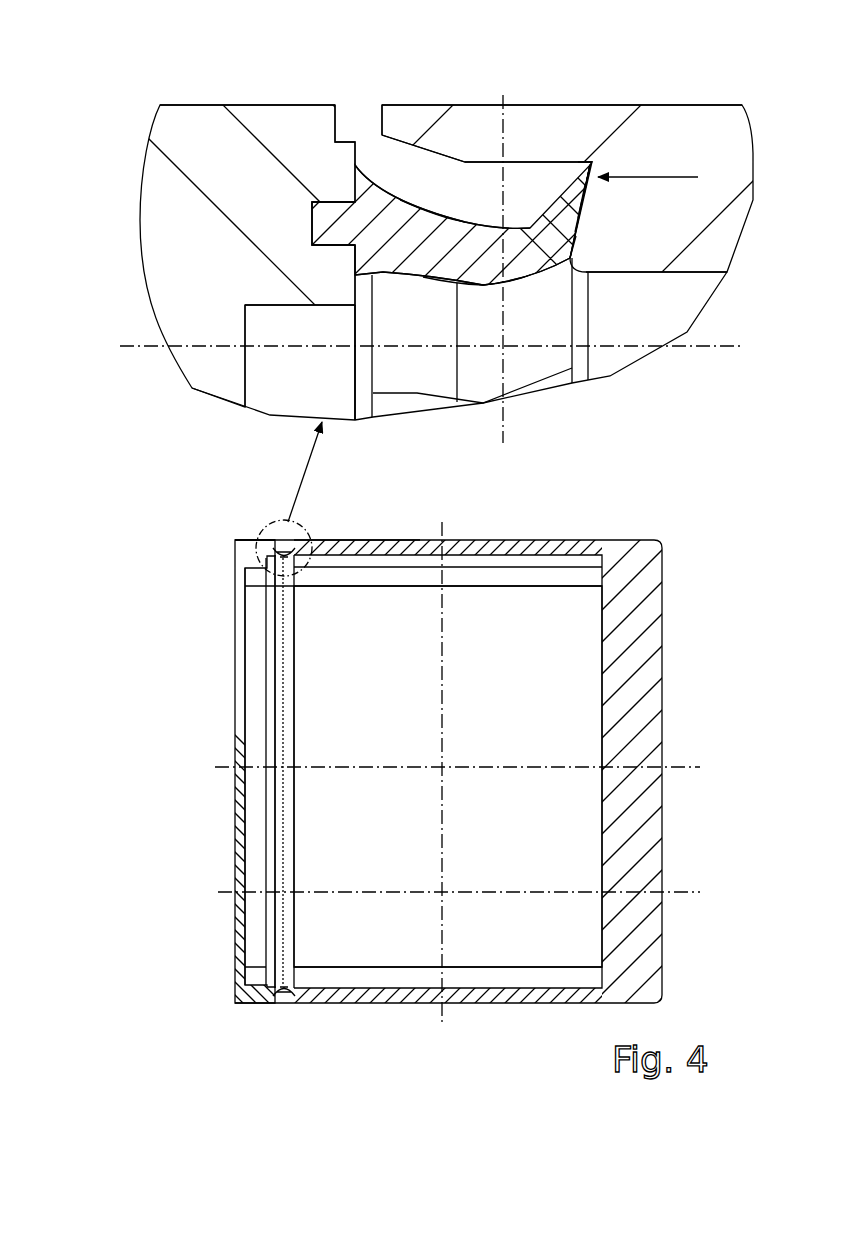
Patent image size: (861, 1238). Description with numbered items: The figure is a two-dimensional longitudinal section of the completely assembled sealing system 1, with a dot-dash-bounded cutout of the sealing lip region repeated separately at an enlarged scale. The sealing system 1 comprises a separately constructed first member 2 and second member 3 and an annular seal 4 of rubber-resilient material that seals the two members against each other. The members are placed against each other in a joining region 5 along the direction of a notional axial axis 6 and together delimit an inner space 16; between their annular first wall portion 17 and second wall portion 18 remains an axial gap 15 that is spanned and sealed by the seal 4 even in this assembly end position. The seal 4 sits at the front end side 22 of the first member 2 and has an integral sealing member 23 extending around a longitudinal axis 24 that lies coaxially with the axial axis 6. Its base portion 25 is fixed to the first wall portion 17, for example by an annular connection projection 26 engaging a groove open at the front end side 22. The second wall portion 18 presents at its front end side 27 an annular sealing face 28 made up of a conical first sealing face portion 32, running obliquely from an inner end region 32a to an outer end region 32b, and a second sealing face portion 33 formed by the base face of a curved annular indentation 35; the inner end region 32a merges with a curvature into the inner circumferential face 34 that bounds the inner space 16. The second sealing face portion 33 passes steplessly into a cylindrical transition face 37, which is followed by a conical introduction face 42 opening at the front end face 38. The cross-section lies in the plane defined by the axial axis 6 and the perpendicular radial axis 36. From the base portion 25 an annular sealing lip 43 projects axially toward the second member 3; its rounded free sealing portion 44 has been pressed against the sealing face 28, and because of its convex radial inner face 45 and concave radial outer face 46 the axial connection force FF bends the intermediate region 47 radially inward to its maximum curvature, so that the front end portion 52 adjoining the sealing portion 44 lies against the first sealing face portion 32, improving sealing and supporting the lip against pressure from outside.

The sealing system 1 is at (695, 574).
The first member 2 is at (148, 207).
The second member 3 is at (740, 216).
The annular seal 4 is at (436, 268).
The joining region 5 is at (346, 103).
The axial axis 6 is at (707, 348).
The axial gap 15 is at (365, 310).
The inner space 16 is at (379, 845).
The first wall portion 17 is at (305, 118).
The second wall portion 18 is at (628, 155).
The front end side 22 is at (358, 367).
The sealing member 23 is at (412, 255).
The longitudinal axis 24 is at (487, 772).
The base portion 25 is at (360, 225).
The connection projection 26 is at (322, 215).
The front end side 27 is at (507, 374).
The sealing face 28 is at (578, 209).
The first sealing face portion 32 is at (577, 226).
The inner end region 32a is at (562, 250).
The outer end region 32b is at (571, 214).
The second sealing face portion 33 is at (586, 167).
The inner circumferential face 34 is at (673, 274).
The annular indentation 35 is at (584, 176).
The radial axis 36 is at (507, 410).
The transition face 37 is at (487, 164).
The front end face 38 is at (380, 118).
The introduction face 42 is at (416, 152).
The sealing lip 43 is at (540, 258).
The sealing portion 44 is at (584, 175).
The radial inner face 45 is at (468, 290).
The radial outer face 46 is at (458, 220).
The intermediate region 47 is at (497, 265).
The front end portion 52 is at (586, 187).
The axial connection force FF is at (667, 177).